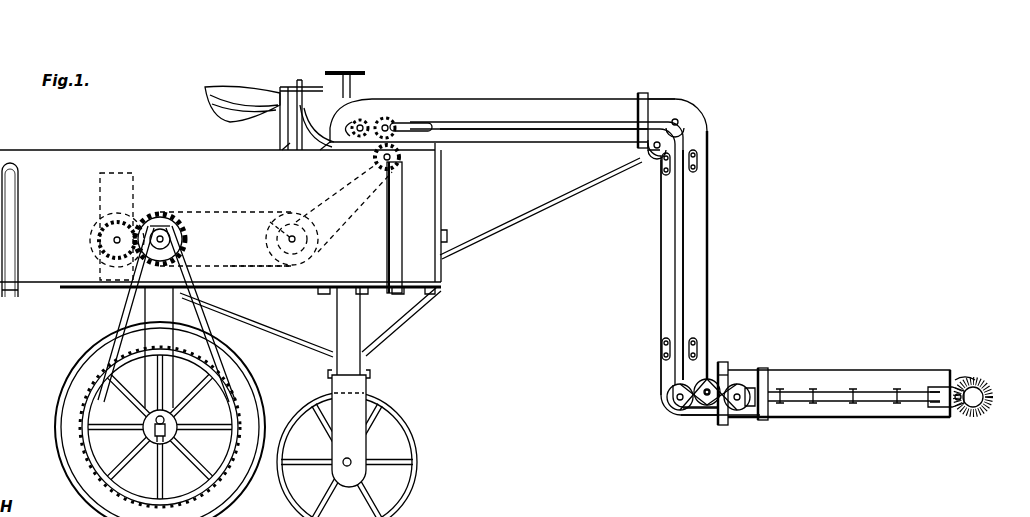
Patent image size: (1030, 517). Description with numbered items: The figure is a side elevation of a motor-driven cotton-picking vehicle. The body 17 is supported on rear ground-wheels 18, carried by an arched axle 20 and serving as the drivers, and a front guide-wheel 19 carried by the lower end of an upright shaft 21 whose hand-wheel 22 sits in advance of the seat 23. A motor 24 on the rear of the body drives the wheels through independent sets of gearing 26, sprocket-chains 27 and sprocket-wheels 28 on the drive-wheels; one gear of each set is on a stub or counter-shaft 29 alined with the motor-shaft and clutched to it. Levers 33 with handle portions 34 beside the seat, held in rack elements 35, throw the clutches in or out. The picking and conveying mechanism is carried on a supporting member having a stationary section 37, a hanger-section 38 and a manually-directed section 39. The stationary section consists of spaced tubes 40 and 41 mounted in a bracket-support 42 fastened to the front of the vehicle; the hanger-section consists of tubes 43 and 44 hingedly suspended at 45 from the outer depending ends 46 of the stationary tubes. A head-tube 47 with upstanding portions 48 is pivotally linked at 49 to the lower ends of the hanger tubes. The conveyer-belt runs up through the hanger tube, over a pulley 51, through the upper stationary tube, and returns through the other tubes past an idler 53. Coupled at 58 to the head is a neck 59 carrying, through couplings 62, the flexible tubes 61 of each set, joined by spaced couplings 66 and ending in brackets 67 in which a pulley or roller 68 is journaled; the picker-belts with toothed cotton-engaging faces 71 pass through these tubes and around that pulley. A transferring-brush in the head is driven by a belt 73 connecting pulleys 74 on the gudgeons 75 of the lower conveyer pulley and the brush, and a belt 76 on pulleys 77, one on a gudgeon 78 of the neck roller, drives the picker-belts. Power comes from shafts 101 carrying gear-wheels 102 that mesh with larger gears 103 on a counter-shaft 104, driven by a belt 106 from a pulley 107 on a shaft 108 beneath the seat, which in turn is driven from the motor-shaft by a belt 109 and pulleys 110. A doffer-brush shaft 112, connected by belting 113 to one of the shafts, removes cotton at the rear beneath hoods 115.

The body 17 is at (172, 218).
The ground-wheels 18 is at (56, 408).
The ground-wheel 19 is at (410, 428).
The arched axle 20 is at (159, 347).
The upright shaft 21 is at (303, 102).
The hand-wheel 22 is at (350, 70).
The seat 23 is at (230, 95).
The motor 24 is at (100, 198).
The sets of gearing 26 is at (95, 243).
The sprocket-chains 27 is at (118, 318).
The sprocket-wheels 28 is at (164, 234).
The stub or counter-shaft 29 is at (112, 238).
The levers 33 is at (280, 141).
The handle portions 34 is at (307, 88).
The rack elements 35 is at (287, 150).
The stationary section 37 is at (503, 99).
The hanger-section 38 is at (691, 247).
The manually-directed section 39 is at (839, 382).
The tube 40 is at (578, 99).
The tube 41 is at (535, 143).
The bracket-support 42 is at (544, 208).
The tube 43 is at (700, 272).
The tube 44 is at (661, 280).
The hinge 45 is at (662, 168).
The outer depending ends 46 is at (665, 148).
The head-tube 47 is at (697, 417).
The upstanding portions 48 is at (698, 366).
The pivotal connection 49 is at (697, 345).
The pulley 51 is at (675, 118).
The idler 53 is at (645, 158).
The coupling 58 is at (736, 360).
The neck 59 is at (757, 385).
The flexible tube 61 is at (884, 378).
The couplings 62 is at (766, 368).
The spaced couplings 66 is at (853, 403).
The brackets 67 is at (962, 408).
The pulley or roller 68 is at (985, 390).
The toothed cotton-engaging faces 71 is at (966, 369).
The belt 73 is at (680, 410).
The pulleys 74 is at (676, 402).
The shafts or gudgeons 75 is at (648, 412).
The belt 76 is at (725, 405).
The pulleys 77 is at (709, 405).
The gudgeon 78 is at (740, 403).
The shafts 101 is at (385, 128).
The gear-wheels 102 is at (415, 124).
The gears 103 is at (400, 162).
The counter-shaft 104 is at (384, 165).
The belt 106 is at (330, 228).
The pulley 107 is at (318, 256).
The shaft 108 is at (290, 258).
The belt 109 is at (236, 264).
The pulleys 110 is at (278, 225).
The shaft 112 is at (318, 126).
The belting 113 is at (369, 119).
The hoods 115 is at (328, 148).